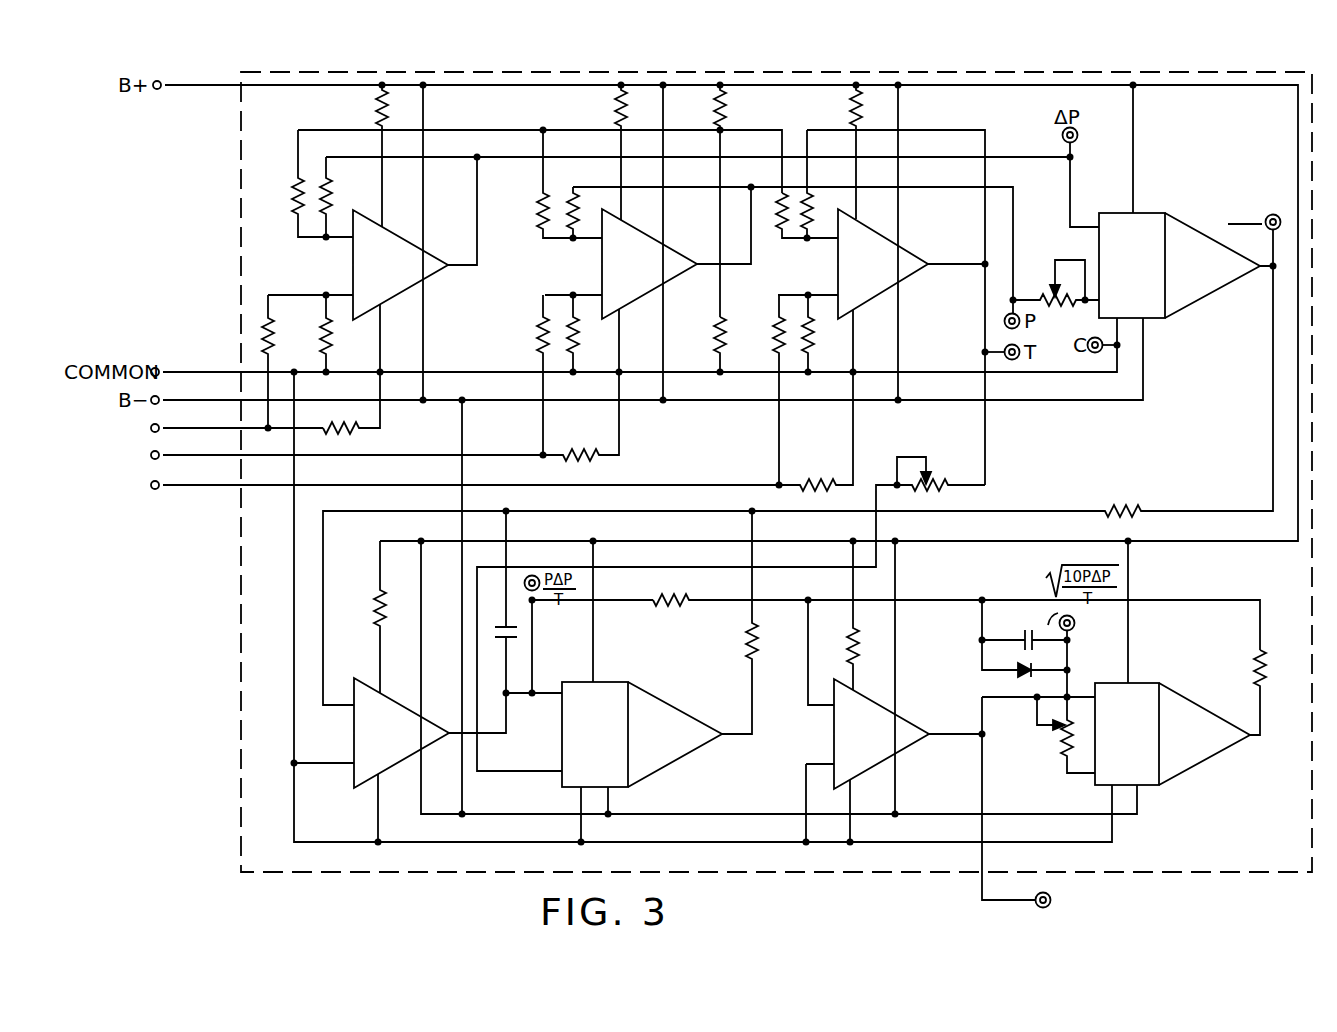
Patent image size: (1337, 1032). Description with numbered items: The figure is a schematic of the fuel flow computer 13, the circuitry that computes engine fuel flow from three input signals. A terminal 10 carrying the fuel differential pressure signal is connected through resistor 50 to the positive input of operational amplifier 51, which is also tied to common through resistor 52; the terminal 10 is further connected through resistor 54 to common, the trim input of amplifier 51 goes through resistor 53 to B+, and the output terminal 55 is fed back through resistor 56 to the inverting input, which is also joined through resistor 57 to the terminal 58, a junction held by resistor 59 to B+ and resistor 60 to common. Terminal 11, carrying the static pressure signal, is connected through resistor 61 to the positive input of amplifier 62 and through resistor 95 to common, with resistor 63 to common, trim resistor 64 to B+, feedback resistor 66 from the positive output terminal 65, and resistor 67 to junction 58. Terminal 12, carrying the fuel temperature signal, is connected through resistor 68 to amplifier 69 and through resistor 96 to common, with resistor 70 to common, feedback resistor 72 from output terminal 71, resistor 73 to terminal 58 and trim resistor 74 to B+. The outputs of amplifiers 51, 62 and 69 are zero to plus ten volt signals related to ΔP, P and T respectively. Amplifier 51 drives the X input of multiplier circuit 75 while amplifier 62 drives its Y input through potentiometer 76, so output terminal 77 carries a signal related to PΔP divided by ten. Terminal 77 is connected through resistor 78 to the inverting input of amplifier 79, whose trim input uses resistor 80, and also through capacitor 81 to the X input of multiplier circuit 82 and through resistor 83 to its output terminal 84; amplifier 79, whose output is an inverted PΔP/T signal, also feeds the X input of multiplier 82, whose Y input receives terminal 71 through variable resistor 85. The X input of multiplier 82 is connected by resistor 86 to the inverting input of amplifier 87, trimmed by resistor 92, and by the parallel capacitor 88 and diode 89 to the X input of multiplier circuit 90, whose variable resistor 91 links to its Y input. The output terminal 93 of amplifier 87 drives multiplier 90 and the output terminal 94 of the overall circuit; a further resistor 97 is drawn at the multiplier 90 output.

The terminal 10 is at (160, 424).
The terminal 11 is at (160, 451).
The terminal 12 is at (160, 481).
The fuel flow computer 13 is at (238, 268).
The resistor 50 is at (262, 334).
The operational amplifier 51 is at (350, 255).
The resistor 52 is at (332, 330).
The resistor 53 is at (378, 101).
The resistor 54 is at (354, 433).
The output terminal 55 is at (448, 267).
The resistor 56 is at (333, 198).
The resistor 57 is at (294, 197).
The terminal 58 is at (726, 128).
The resistor 59 is at (717, 107).
The resistor 60 is at (715, 330).
The resistor 61 is at (540, 335).
The amplifier 62 is at (600, 257).
The resistor 63 is at (574, 331).
The resistor 64 is at (618, 107).
The positive output terminal 65 is at (693, 259).
The resistor 66 is at (566, 203).
The resistor 67 is at (540, 219).
The resistor 68 is at (776, 330).
The amplifier 69 is at (836, 269).
The resistor 70 is at (811, 344).
The output terminal 71 is at (930, 264).
The resistor 72 is at (812, 225).
The resistor 73 is at (781, 224).
The resistor 74 is at (852, 102).
The multiplier circuit 75 is at (1141, 210).
The potentiometer 76 is at (1046, 298).
The output terminal 77 is at (1270, 272).
The resistor 78 is at (1112, 508).
The amplifier 79 is at (350, 740).
The resistor 80 is at (375, 612).
The capacitor 81 is at (500, 638).
The multiplier circuit 82 is at (683, 710).
The resistor 83 is at (744, 652).
The output terminal 84 is at (725, 735).
The variable resistor 85 is at (938, 482).
The resistor 86 is at (674, 598).
The amplifier 87 is at (832, 741).
The capacitor 88 is at (1026, 636).
The diode 89 is at (1018, 686).
The multiplier circuit 90 is at (1138, 686).
The variable resistor 91 is at (1058, 740).
The resistor 92 is at (845, 646).
The output terminal 93 is at (974, 738).
The output terminal 94 is at (1032, 906).
The resistor 95 is at (583, 452).
The resistor 96 is at (816, 482).
The resistor 97 is at (1264, 676).